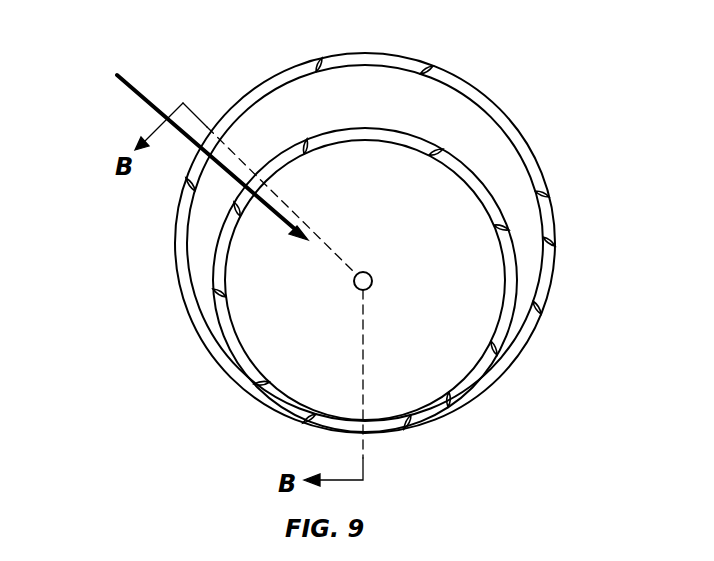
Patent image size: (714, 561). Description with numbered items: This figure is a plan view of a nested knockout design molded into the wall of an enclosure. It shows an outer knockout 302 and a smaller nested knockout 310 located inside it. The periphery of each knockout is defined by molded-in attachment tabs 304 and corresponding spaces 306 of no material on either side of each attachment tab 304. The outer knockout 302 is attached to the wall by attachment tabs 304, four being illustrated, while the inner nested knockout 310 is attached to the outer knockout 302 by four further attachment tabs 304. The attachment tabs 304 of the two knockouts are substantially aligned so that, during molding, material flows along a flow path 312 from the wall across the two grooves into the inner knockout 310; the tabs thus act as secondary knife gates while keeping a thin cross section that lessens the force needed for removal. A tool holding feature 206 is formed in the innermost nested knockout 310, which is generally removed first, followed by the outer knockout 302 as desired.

The tool holding feature 206 is at (354, 283).
The outer knockout 302 is at (453, 118).
The attachment tab 304 is at (267, 163).
The space 306 is at (343, 137).
The nested knockout 310 is at (282, 267).
The flow path 312 is at (133, 90).